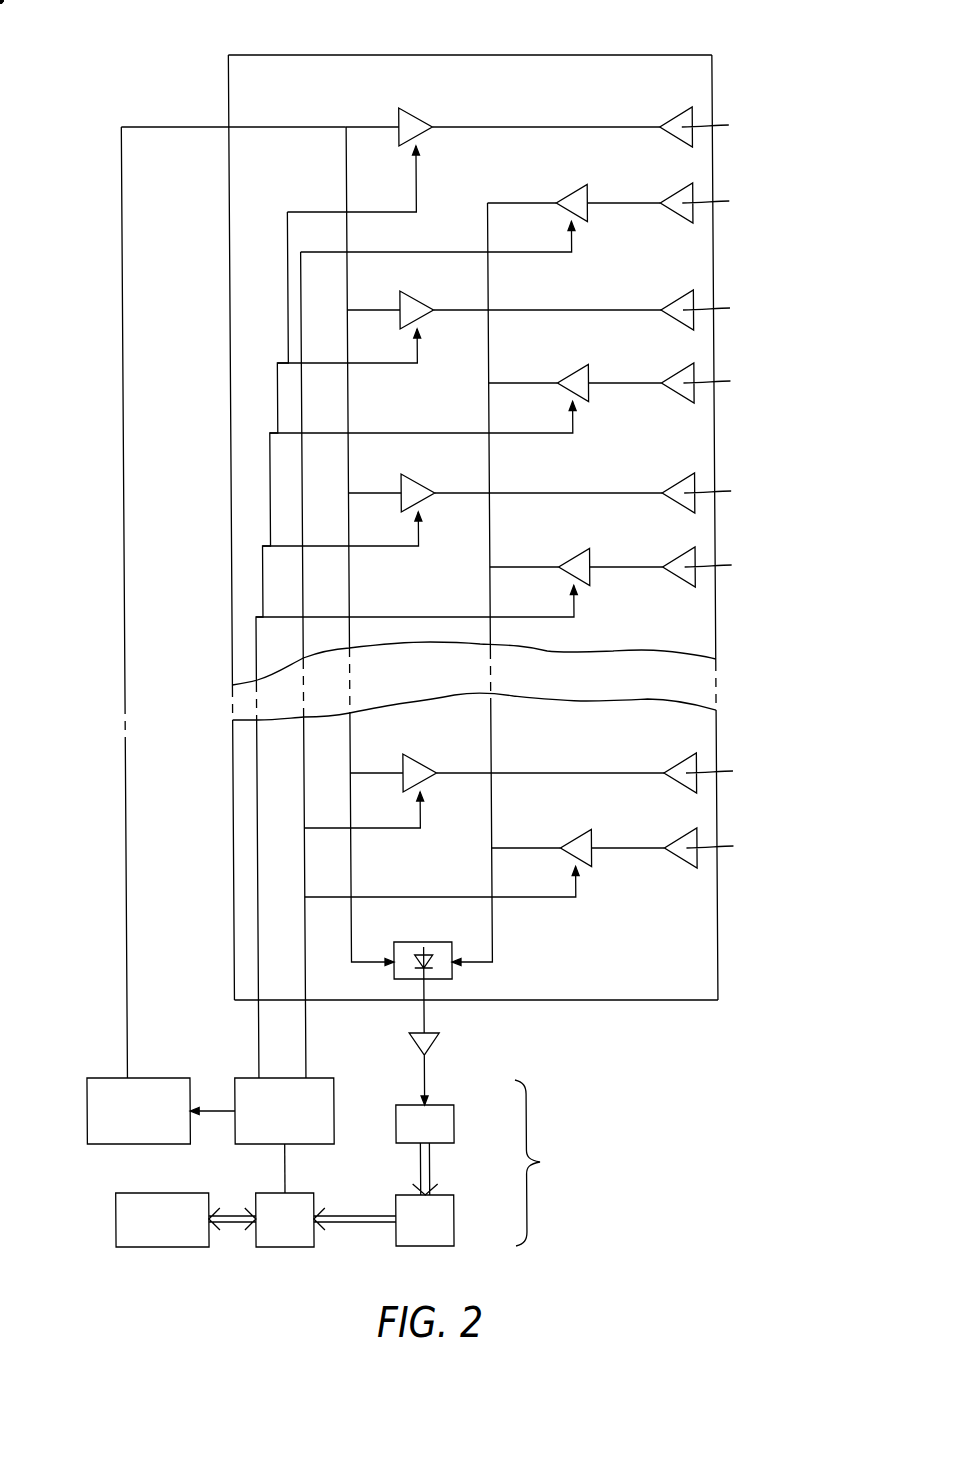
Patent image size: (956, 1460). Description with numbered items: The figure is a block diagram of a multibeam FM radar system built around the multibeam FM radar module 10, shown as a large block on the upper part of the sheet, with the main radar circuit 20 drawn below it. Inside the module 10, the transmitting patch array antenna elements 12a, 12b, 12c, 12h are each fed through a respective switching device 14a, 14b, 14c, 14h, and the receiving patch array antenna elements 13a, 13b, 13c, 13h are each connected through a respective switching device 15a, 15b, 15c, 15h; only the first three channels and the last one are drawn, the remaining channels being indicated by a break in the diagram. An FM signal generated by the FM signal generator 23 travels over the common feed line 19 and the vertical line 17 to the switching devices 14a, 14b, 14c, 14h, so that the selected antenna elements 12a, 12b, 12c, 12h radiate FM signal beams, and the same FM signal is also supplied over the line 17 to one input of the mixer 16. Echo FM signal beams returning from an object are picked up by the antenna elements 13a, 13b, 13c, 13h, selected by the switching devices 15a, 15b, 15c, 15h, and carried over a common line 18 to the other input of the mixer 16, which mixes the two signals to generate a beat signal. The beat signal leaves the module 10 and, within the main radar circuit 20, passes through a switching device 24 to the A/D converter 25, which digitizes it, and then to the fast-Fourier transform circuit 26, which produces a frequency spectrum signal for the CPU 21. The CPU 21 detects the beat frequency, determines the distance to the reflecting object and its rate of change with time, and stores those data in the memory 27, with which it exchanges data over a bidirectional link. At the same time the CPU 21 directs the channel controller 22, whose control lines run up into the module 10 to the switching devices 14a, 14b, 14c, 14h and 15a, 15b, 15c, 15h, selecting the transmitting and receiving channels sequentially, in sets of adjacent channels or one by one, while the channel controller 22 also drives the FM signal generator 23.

The multibeam FM radar module 10 is at (385, 35).
The patch array antenna element 12a is at (599, 127).
The patch array antenna element 12b is at (600, 310).
The patch array antenna element 12c is at (601, 493).
The patch array antenna element 12h is at (603, 773).
The patch array antenna element 13a is at (677, 203).
The patch array antenna element 13b is at (677, 383).
The patch array antenna element 13c is at (679, 567).
The patch array antenna element 13h is at (681, 848).
The switching device 14a is at (413, 116).
The switching device 14b is at (409, 298).
The switching device 14c is at (409, 481).
The switching device 14h is at (411, 763).
The switching device 15a is at (569, 193).
The switching device 15b is at (569, 373).
The switching device 15c is at (570, 557).
The switching device 15h is at (570, 838).
The mixer 16 is at (446, 952).
The transmit signal bus 17 is at (347, 396).
The receive signal bus 18 is at (485, 362).
The common feed line 19 is at (272, 125).
The main radar circuit 20 is at (543, 1163).
The CPU 21 is at (297, 1193).
The channel controller 22 is at (233, 1078).
The FM signal generator 23 is at (90, 1078).
The switching device 24 is at (424, 1047).
The A/D converter 25 is at (398, 1105).
The fast-Fourier transform circuit 26 is at (437, 1195).
The memory 27 is at (108, 1218).